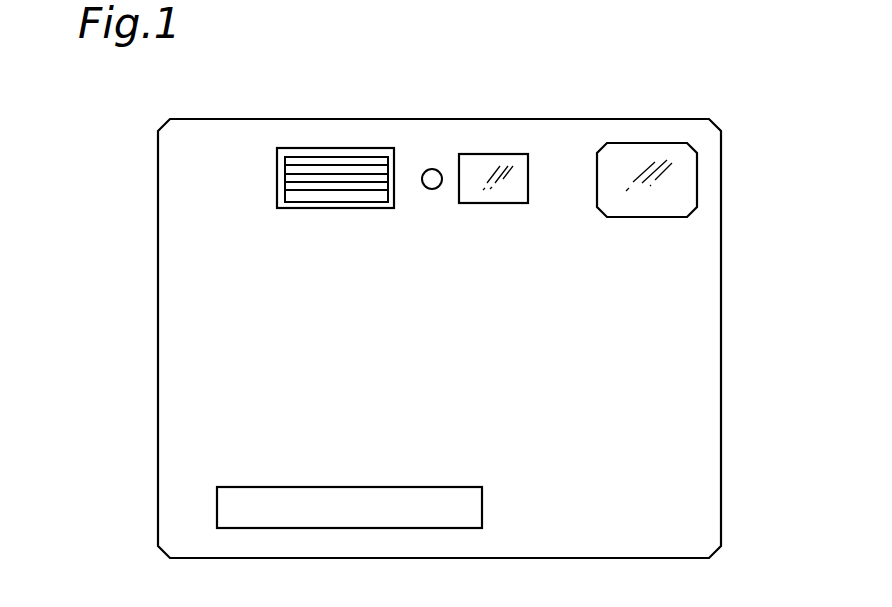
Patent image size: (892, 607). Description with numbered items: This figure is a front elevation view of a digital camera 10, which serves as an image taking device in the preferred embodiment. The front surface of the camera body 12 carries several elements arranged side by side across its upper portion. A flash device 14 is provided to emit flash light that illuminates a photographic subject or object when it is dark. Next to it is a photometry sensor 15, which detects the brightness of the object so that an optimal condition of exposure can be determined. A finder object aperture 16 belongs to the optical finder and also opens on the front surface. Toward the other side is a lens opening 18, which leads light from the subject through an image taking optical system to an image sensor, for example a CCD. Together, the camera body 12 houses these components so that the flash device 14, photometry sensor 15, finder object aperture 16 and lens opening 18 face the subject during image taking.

The digital camera 10 is at (753, 118).
The camera body 12 is at (234, 119).
The flash device 14 is at (328, 208).
The photometry sensor 15 is at (432, 189).
The finder object aperture 16 is at (488, 203).
The lens opening 18 is at (648, 217).